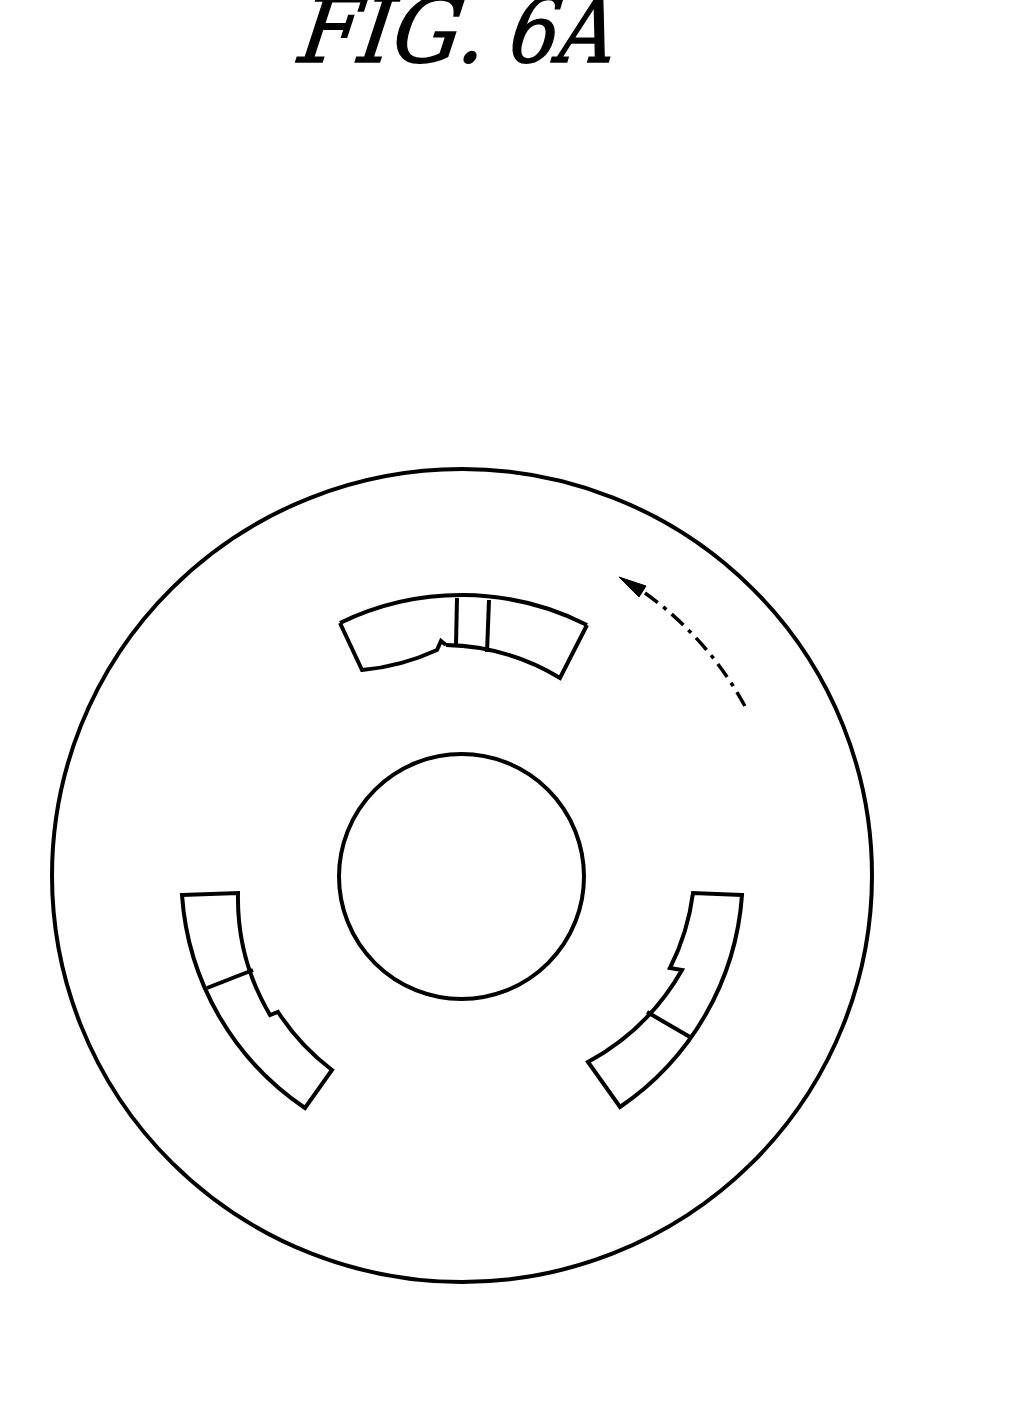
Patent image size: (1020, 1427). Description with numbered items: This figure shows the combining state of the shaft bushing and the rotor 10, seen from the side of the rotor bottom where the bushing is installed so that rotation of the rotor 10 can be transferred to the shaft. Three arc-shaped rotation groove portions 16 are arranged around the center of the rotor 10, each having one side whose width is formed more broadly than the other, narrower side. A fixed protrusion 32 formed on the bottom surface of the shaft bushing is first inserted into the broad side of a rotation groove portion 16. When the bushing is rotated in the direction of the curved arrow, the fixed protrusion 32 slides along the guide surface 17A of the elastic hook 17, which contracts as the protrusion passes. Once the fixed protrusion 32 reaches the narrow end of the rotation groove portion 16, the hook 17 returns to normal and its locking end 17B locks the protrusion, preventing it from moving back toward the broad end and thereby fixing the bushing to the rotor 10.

The rotor 10 is at (722, 557).
The rotation groove portions 16 is at (345, 633).
The hook 17 is at (418, 328).
The guide surface 17A is at (457, 645).
The locking end 17B is at (439, 642).
The fixed protrusion 32 is at (530, 630).